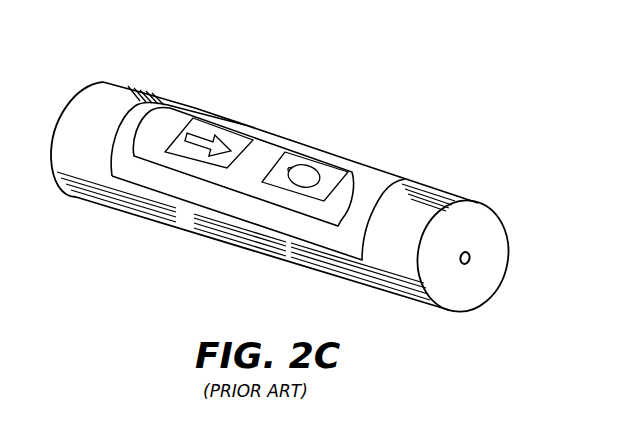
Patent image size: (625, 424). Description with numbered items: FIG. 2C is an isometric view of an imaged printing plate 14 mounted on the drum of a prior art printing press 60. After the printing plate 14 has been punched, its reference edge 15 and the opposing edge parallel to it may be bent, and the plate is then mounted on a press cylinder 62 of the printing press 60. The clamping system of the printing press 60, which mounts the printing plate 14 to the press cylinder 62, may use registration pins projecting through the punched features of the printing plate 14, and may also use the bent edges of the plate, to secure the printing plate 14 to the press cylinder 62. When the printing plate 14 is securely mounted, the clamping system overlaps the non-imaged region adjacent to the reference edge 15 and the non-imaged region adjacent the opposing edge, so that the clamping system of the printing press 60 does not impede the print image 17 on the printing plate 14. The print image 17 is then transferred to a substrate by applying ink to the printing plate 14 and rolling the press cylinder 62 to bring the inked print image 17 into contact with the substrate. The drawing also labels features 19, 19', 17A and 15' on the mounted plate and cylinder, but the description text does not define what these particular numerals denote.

The printing press 60 is at (321, 175).
The printing plate 14 is at (395, 183).
The end cap 19 is at (84, 121).
The end cap edge 19' is at (135, 67).
The print image 17 is at (272, 146).
The keypad panel side face 17A is at (173, 188).
The reference edge 15 is at (171, 233).
The grip strip end 15' is at (343, 274).
The press cylinder 62 is at (433, 203).